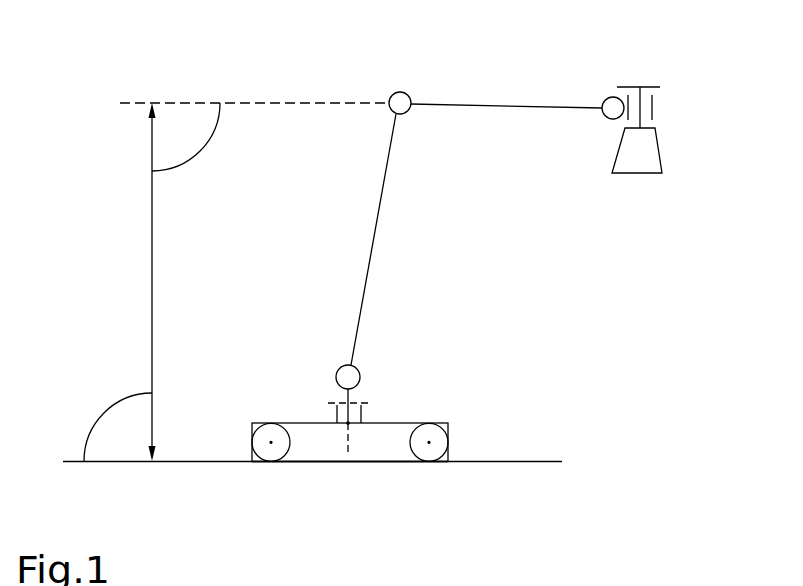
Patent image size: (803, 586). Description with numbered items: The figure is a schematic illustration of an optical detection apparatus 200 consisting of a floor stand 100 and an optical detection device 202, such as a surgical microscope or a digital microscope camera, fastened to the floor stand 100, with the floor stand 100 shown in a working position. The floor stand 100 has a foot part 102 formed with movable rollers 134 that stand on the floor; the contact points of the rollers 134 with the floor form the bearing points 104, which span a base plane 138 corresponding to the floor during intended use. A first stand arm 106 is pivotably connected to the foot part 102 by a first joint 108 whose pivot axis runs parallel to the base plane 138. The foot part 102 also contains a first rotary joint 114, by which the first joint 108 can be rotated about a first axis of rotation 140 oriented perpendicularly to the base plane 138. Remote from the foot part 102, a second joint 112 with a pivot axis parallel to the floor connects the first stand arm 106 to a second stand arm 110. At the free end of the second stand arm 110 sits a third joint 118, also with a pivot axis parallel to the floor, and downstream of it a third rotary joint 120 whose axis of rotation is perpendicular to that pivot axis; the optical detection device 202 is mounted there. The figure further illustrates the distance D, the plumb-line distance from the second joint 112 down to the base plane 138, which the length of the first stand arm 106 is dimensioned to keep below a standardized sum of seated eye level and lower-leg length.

The floor stand 100 is at (352, 180).
The foot part 102 is at (399, 423).
The bearing points 104 is at (272, 462).
The first stand arm 106 is at (375, 235).
The first joint 108 is at (345, 372).
The second stand arm 110 is at (506, 106).
The second joint 112 is at (400, 100).
The first rotary joint 114 is at (346, 419).
The third joint 118 is at (612, 106).
The third rotary joint 120 is at (643, 110).
The rollers 134 is at (268, 440).
The base plane 138 is at (372, 462).
The first axis of rotation 140 is at (358, 418).
The optical detection apparatus 200 is at (649, 56).
The optical detection device 202 is at (645, 157).
The distance D is at (152, 282).